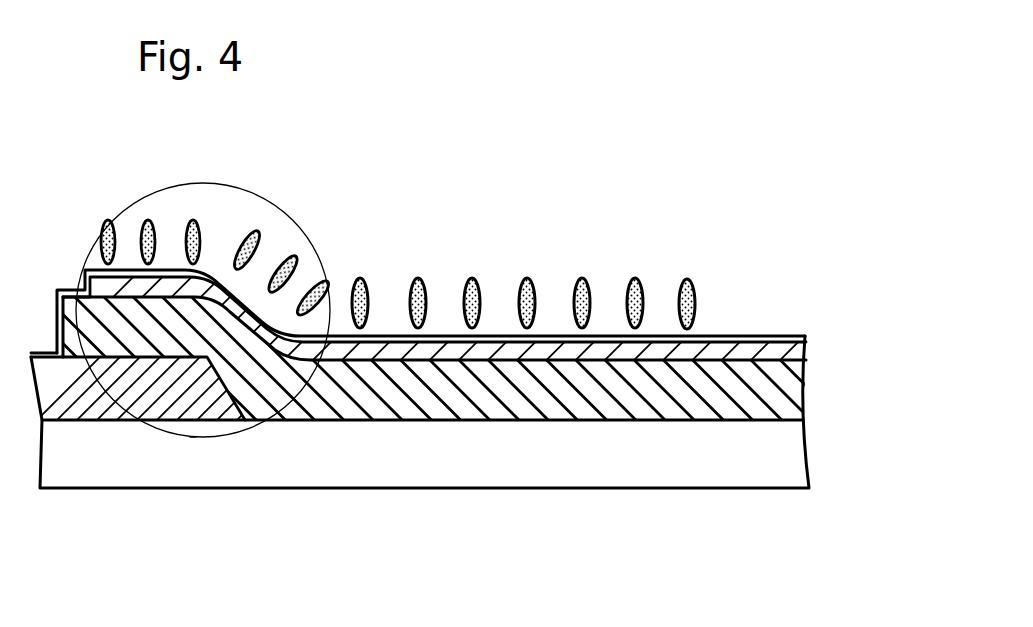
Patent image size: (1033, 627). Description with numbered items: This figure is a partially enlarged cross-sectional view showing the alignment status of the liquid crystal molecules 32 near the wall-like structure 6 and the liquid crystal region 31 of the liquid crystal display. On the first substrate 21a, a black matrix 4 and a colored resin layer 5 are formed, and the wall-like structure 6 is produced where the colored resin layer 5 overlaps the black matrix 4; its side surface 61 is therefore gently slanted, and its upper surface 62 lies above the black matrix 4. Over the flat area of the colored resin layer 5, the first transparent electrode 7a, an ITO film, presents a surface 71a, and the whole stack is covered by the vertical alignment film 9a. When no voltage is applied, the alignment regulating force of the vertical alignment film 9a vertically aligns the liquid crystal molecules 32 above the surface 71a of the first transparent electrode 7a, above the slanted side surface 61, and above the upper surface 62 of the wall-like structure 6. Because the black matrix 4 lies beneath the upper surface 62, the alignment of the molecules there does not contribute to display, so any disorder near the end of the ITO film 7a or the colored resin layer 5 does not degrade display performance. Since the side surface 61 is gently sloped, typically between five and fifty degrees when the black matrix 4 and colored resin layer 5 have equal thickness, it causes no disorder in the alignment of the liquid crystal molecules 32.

The black matrix 4 is at (76, 392).
The colored resin layer 5 is at (408, 406).
The wall-like structure 6 is at (232, 435).
The first transparent electrode 7a is at (515, 352).
The vertical alignment film 9a is at (788, 338).
The first substrate 21a is at (675, 470).
The liquid crystal region 31 is at (487, 179).
The liquid crystal molecules 32 is at (696, 305).
The side surface of the wall-like structure 61 is at (350, 268).
The upper surface of the wall-like structure 62 is at (223, 207).
The surface of the first transparent electrode 71a is at (707, 277).